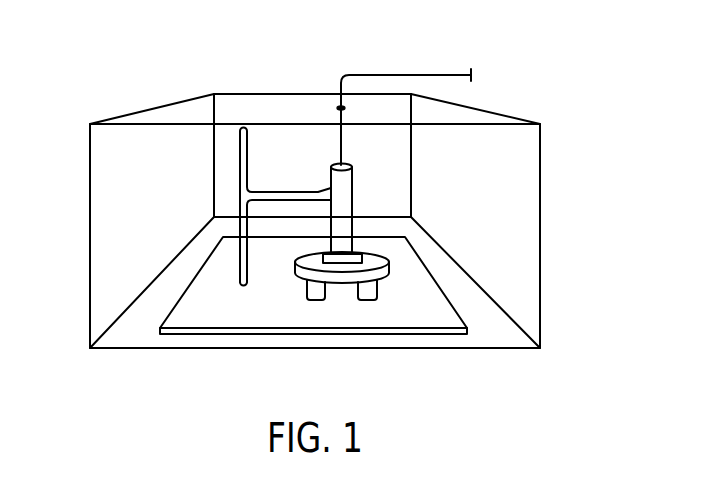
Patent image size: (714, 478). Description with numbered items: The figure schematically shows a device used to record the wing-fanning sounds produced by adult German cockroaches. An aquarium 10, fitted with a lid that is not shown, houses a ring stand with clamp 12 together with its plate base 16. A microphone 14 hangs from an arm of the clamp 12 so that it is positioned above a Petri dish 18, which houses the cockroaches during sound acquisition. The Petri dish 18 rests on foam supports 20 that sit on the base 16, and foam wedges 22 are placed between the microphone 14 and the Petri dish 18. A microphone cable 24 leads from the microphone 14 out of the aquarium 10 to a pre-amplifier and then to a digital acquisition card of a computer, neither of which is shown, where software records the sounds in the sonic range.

The aquarium 10 is at (89, 240).
The ring stand with clamp 12 is at (249, 148).
The microphone 14 is at (343, 227).
The plate base 16 is at (185, 335).
The Petri dish 18 is at (348, 284).
The foam supports 20 is at (316, 301).
The foam wedges 22 is at (357, 253).
The microphone cable 24 is at (403, 73).